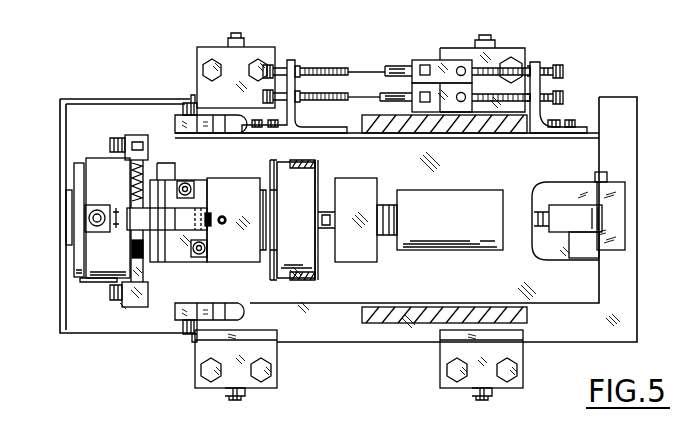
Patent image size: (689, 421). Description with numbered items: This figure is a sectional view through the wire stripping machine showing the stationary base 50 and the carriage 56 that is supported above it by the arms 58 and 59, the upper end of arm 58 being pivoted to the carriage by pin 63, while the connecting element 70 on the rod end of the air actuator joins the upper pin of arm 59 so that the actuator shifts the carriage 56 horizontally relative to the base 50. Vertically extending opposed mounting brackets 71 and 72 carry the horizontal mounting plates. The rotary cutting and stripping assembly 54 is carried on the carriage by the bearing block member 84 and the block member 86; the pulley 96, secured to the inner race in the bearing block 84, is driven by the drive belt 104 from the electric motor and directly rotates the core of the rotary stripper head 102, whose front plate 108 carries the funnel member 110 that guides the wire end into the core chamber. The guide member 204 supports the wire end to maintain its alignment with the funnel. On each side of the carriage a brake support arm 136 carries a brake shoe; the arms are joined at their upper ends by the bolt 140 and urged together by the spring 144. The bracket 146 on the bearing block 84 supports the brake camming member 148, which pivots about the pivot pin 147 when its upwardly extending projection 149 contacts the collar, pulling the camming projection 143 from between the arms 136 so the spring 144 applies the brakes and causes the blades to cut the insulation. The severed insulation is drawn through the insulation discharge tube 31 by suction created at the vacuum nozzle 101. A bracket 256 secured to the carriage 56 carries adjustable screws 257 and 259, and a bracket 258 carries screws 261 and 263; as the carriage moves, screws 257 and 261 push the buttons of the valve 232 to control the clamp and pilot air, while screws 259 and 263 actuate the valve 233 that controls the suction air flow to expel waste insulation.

The insulation discharge tube 31 is at (331, 210).
The base 50 is at (639, 262).
The rotary cutting and stripping assembly 54 is at (296, 288).
The carriage 56 is at (588, 304).
The arm 58 is at (177, 127).
The arm 59 is at (617, 211).
The pin 63 is at (188, 102).
The connecting element 70 is at (580, 212).
The mounting bracket 71 is at (527, 323).
The mounting bracket 72 is at (497, 128).
The bearing block member 84 is at (233, 263).
The block member 86 is at (368, 255).
The pulley 96 is at (319, 172).
The vacuum nozzle 101 is at (465, 251).
The rotary stripper head 102 is at (94, 285).
The drive belt 104 is at (307, 161).
The front plate 108 is at (78, 162).
The funnel member 110 is at (70, 242).
The brake support arm 136 is at (139, 150).
The bolt 140 is at (215, 163).
The camming projection 143 is at (131, 223).
The spring 144 is at (130, 183).
The bracket 146 is at (197, 208).
The pivot pin 147 is at (208, 234).
The brake camming member 148 is at (208, 227).
The upwardly extending projection 149 is at (178, 224).
The guide member 204 is at (60, 336).
The valve 232 is at (421, 60).
The valve 233 is at (447, 113).
The bracket 256 is at (289, 62).
The adjustable screw 257 is at (327, 67).
The bracket 258 is at (541, 87).
The adjustable screw 259 is at (312, 104).
The screw 261 is at (558, 65).
The adjustable screw 263 is at (563, 98).